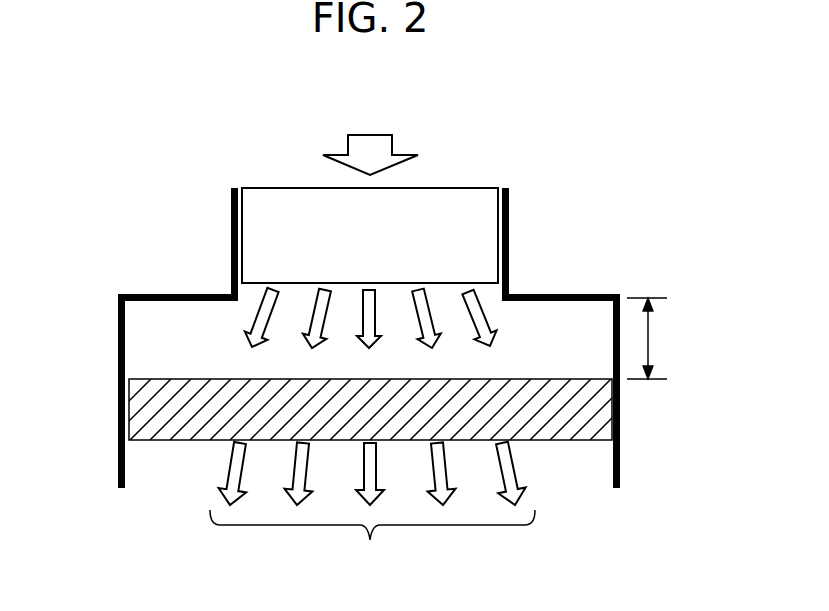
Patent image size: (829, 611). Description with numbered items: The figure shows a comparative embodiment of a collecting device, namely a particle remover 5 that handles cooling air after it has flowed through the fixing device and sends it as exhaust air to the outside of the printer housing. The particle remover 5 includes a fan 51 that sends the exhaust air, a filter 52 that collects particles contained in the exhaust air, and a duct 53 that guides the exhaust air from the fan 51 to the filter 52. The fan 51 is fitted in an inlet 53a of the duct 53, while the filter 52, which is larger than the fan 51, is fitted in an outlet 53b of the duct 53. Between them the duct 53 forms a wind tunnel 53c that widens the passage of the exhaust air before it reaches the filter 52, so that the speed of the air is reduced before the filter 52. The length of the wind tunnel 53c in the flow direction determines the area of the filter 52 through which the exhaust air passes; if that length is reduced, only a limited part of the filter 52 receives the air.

The particle remover 5 is at (174, 257).
The fan 51 is at (282, 198).
The filter 52 is at (170, 388).
The duct 53 is at (607, 270).
The inlet 53a is at (510, 215).
The outlet 53b is at (620, 438).
The wind tunnel 53c is at (547, 297).